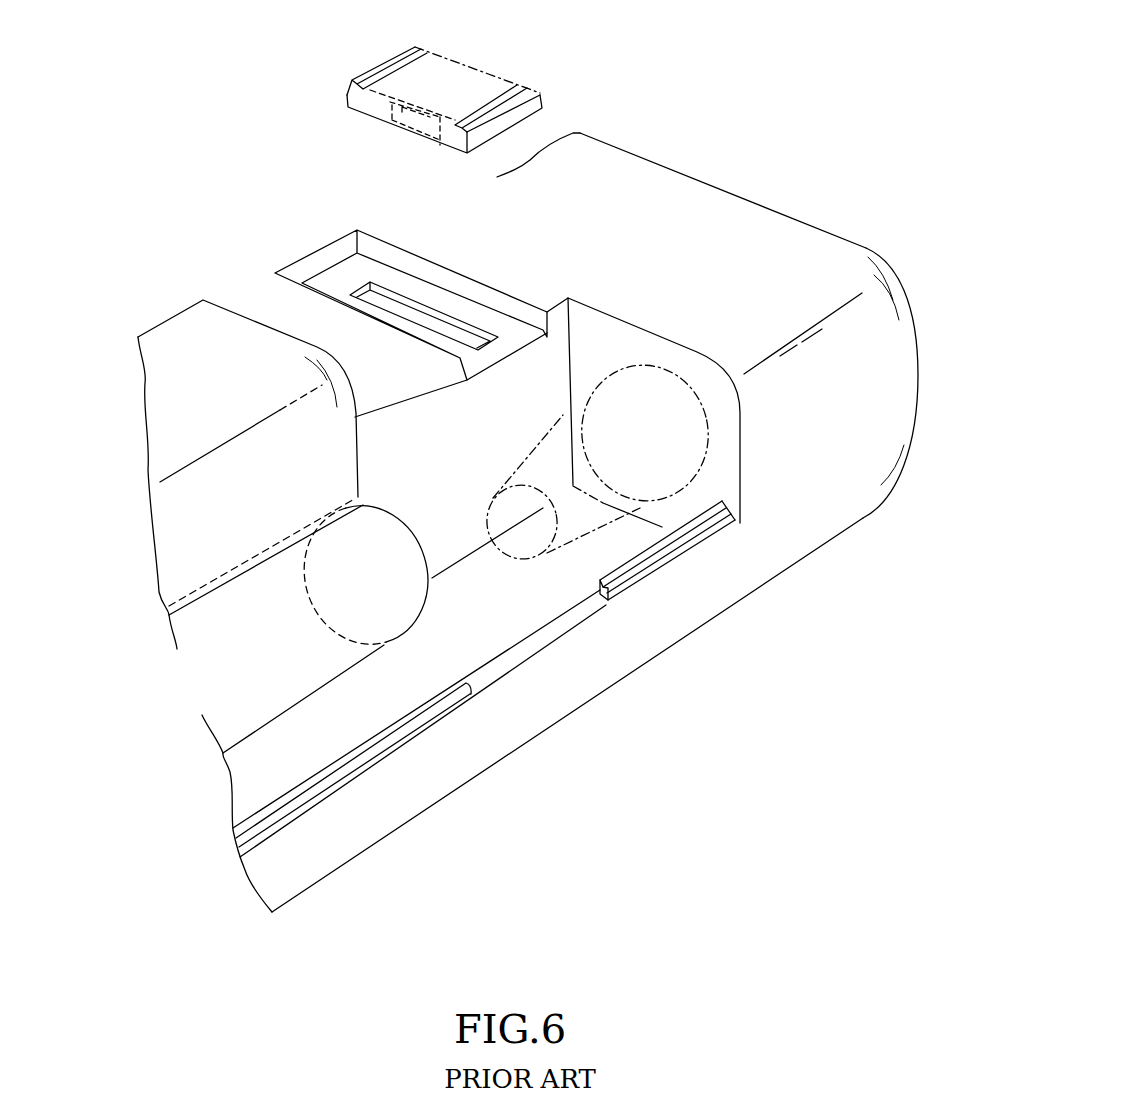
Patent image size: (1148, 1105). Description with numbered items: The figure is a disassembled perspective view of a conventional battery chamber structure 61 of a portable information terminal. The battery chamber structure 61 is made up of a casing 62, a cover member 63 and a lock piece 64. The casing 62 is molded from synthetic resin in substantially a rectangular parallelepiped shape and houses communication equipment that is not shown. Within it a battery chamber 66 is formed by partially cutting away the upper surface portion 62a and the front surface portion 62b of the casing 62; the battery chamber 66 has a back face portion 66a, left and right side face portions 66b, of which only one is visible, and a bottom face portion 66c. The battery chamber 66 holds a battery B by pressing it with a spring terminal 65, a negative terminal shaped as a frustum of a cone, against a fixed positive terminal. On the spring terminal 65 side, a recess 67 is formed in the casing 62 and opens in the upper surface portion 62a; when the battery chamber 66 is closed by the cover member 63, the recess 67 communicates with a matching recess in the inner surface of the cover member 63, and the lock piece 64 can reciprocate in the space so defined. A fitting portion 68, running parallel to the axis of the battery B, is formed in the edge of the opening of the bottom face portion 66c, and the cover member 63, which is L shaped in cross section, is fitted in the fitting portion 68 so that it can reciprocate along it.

The battery chamber structure 61 is at (714, 46).
The casing 62 is at (555, 499).
The upper surface portion 62a is at (641, 173).
The front surface portion 62b is at (858, 497).
The cover member 63 is at (220, 325).
The lock piece 64 is at (455, 70).
The spring terminal 65 is at (622, 530).
The battery chamber 66 is at (569, 607).
The back face portion 66a is at (410, 400).
The side face portion 66b is at (642, 347).
The bottom face portion 66c is at (492, 748).
The recess 67 is at (403, 282).
The fitting portion 68 is at (712, 540).
The battery B is at (230, 772).